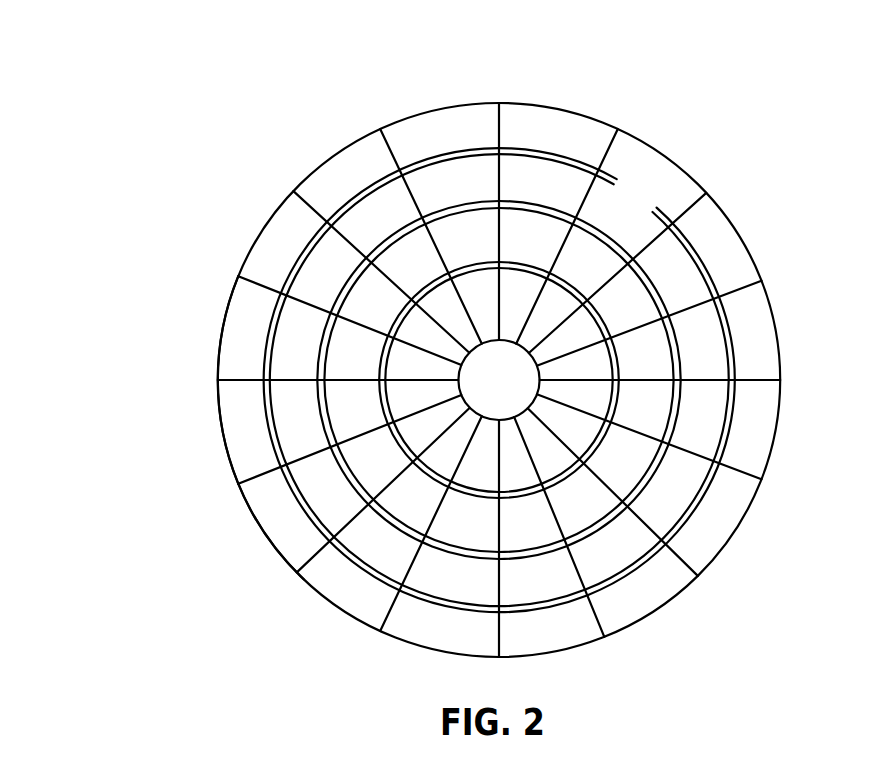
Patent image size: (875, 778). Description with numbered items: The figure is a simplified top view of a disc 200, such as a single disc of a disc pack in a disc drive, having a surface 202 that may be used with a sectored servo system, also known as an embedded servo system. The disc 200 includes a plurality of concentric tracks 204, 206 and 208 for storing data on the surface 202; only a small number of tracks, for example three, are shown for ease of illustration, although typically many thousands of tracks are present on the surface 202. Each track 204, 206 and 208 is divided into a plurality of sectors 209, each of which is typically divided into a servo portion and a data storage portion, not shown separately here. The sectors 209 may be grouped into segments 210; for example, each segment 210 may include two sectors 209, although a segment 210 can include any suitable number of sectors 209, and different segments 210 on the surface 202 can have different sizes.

The disc 200 is at (677, 87).
The surface 202 is at (660, 204).
The track 204 is at (465, 495).
The track 206 is at (435, 553).
The track 208 is at (330, 600).
The sectors 209 is at (228, 493).
The segments 210 is at (218, 274).